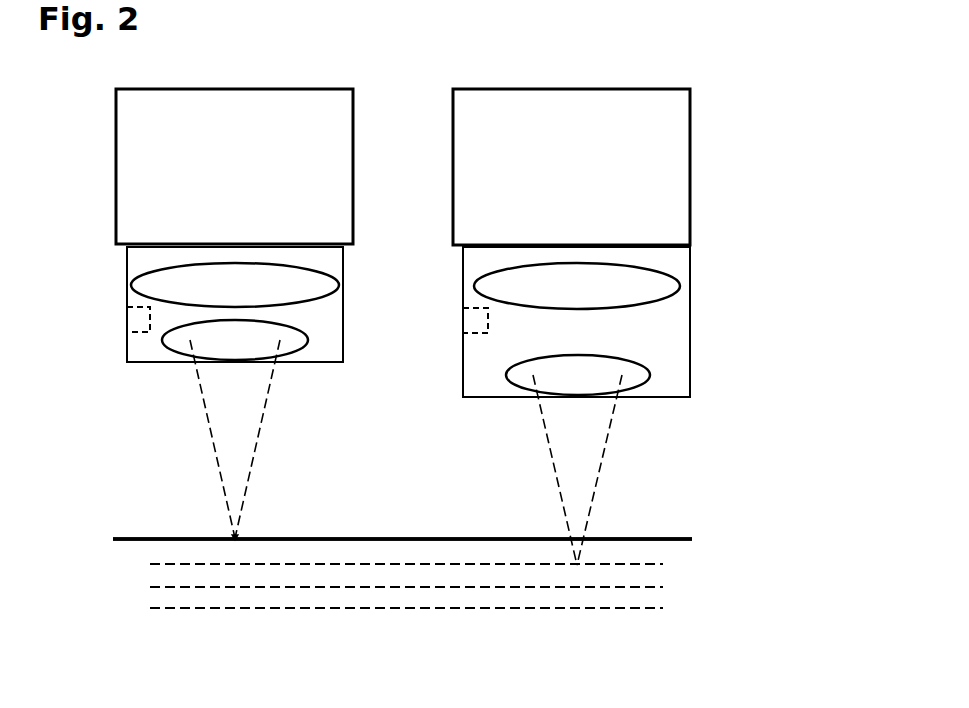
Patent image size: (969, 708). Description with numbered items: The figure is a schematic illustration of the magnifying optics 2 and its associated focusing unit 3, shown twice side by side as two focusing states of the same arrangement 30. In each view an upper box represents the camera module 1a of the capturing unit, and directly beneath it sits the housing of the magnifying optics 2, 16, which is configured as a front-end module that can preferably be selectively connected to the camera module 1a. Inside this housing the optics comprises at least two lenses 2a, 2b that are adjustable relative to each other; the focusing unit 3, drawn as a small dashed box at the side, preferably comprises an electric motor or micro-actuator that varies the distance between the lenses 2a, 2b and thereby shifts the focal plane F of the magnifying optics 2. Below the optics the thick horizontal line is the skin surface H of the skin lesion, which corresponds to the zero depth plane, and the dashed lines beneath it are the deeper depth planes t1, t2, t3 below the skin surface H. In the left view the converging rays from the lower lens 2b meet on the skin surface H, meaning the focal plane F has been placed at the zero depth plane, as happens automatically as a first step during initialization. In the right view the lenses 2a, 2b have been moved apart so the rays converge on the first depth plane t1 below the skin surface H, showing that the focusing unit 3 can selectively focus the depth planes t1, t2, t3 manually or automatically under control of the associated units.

The laser processing system 30 is at (450, 0).
The camera module 1a is at (403, 167).
The magnifying optics 2 is at (130, 283).
The housing 16 is at (343, 303).
The lens 2a is at (405, 286).
The lens 2b is at (406, 357).
The focusing unit 3 is at (137, 318).
The focal plane F is at (238, 536).
The skin surface H is at (667, 539).
The first depth plane t1 is at (150, 564).
The depth plane t2 is at (150, 587).
The depth plane t3 is at (150, 608).